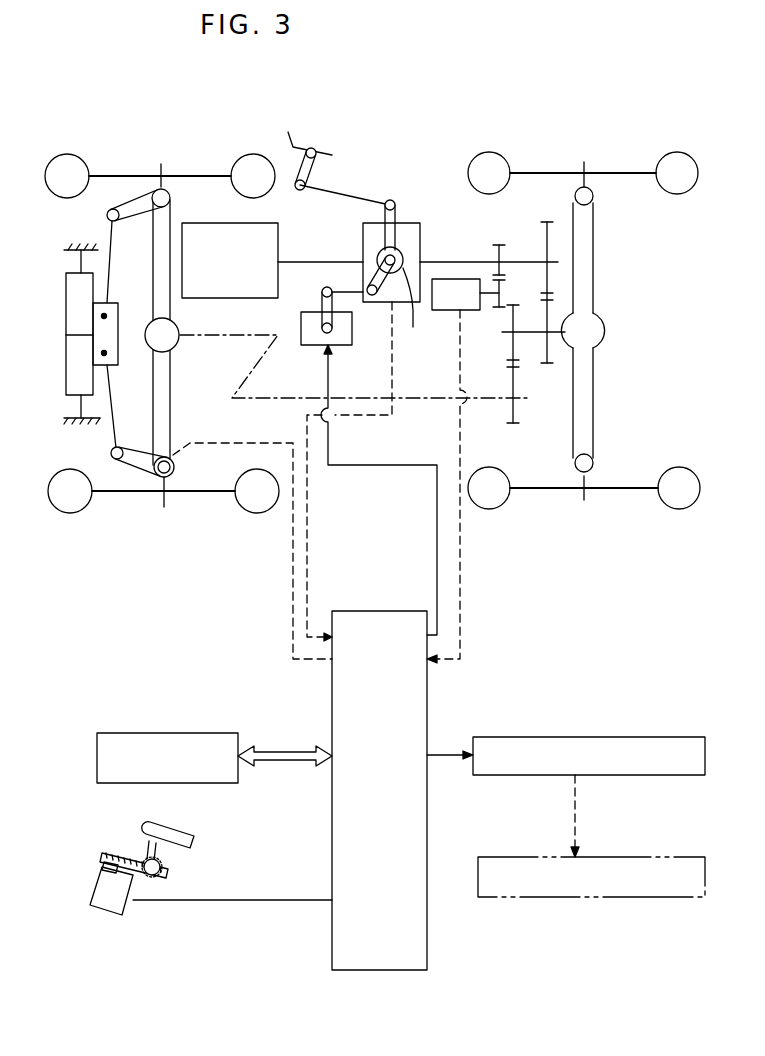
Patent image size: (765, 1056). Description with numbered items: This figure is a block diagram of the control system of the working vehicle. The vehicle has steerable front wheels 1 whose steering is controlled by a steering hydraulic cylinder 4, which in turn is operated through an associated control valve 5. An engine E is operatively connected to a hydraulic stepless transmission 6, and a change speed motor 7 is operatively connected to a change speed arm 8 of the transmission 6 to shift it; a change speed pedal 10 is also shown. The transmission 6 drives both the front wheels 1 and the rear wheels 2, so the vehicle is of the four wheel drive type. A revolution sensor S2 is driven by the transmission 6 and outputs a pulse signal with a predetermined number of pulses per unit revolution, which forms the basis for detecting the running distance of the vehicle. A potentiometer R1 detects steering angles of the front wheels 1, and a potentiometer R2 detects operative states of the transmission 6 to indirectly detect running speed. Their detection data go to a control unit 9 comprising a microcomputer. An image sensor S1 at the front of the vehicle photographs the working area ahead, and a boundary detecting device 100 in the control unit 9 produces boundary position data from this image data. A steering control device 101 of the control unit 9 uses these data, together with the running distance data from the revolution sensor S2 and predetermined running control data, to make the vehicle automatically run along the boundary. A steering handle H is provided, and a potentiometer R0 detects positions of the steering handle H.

The front wheels 1 is at (118, 173).
The rear wheels 2 is at (549, 170).
The steering hydraulic cylinder 4 is at (66, 385).
The control valve 5 is at (480, 737).
The hydraulic stepless transmission 6 is at (410, 223).
The change speed motor 7 is at (342, 347).
The change speed arm 8 is at (393, 240).
The control unit 9 is at (415, 812).
The boundary detecting device 100 is at (415, 812).
The steering control device 101 is at (380, 970).
The accelerator pedal 10 is at (302, 142).
The engine E is at (278, 237).
The image sensor S1 is at (153, 733).
The revolution sensor S2 is at (463, 471).
The potentiometer R0 is at (105, 915).
The potentiometer R1 is at (174, 474).
The potentiometer R2 is at (415, 314).
The steering handle H is at (200, 833).